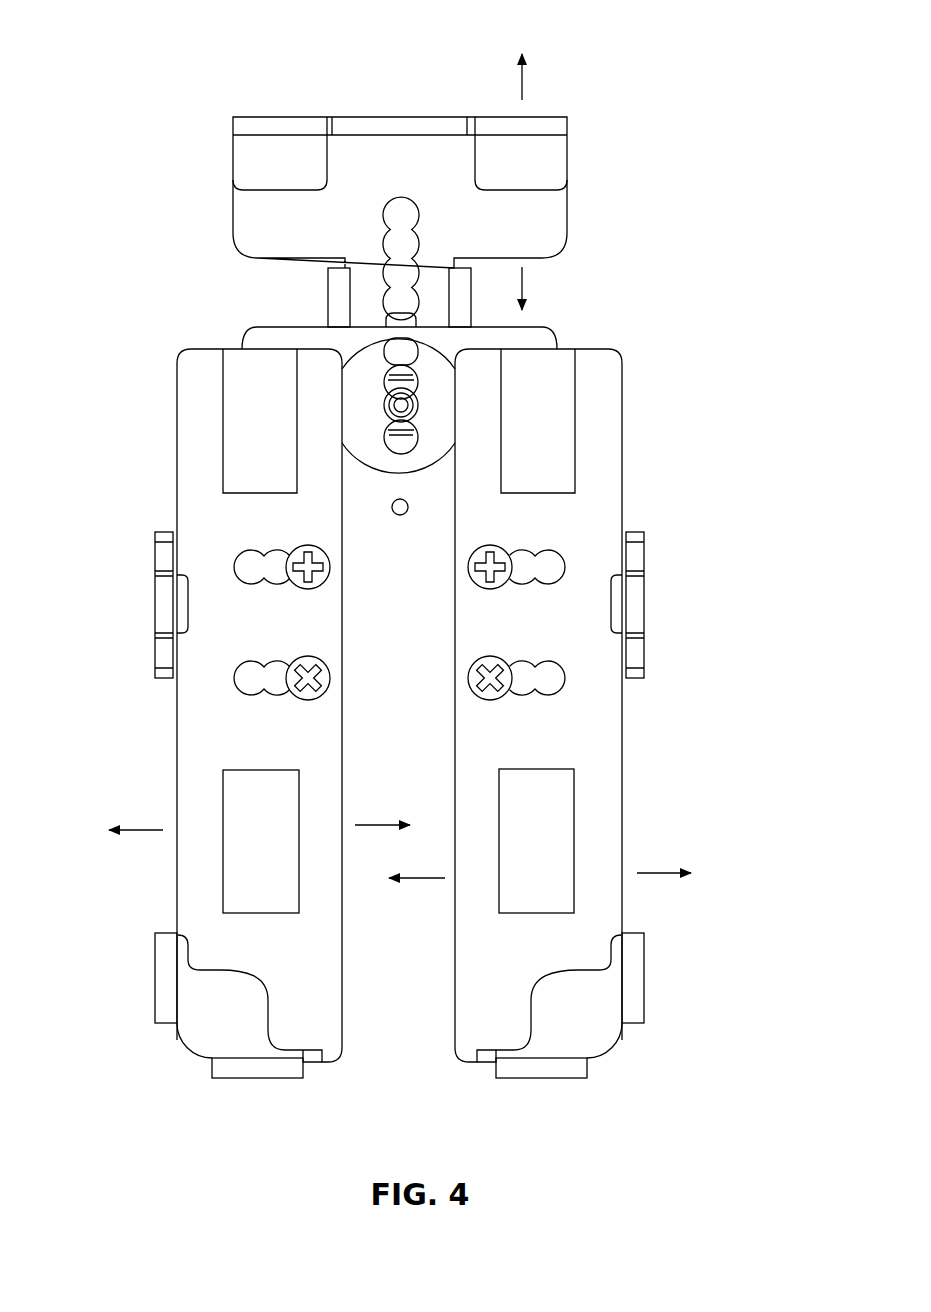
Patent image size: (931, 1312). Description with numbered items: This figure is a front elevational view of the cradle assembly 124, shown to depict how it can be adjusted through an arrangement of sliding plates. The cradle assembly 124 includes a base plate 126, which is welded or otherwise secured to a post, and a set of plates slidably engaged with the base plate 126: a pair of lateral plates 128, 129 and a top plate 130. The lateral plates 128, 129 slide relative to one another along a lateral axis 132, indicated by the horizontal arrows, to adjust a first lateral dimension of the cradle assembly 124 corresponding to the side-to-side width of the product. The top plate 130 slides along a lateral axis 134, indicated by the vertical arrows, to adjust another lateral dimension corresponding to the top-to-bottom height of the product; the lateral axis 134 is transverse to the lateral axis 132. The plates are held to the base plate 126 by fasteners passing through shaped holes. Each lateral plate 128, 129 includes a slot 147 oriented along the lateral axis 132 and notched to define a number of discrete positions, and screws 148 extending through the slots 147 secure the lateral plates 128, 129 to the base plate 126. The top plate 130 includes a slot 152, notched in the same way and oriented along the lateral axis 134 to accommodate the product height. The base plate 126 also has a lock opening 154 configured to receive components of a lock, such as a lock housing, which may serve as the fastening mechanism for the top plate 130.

The cradle assembly 124 is at (712, 66).
The base plate 126 is at (553, 333).
The lateral plate 128 is at (197, 378).
The lateral plate 129 is at (600, 415).
The top plate 130 is at (555, 218).
The lateral axis 132 is at (378, 822).
The lateral axis 134 is at (527, 86).
The slot 147 is at (243, 558).
The screw 148 is at (303, 546).
The slot 152 is at (412, 243).
The lock opening 154 is at (371, 365).